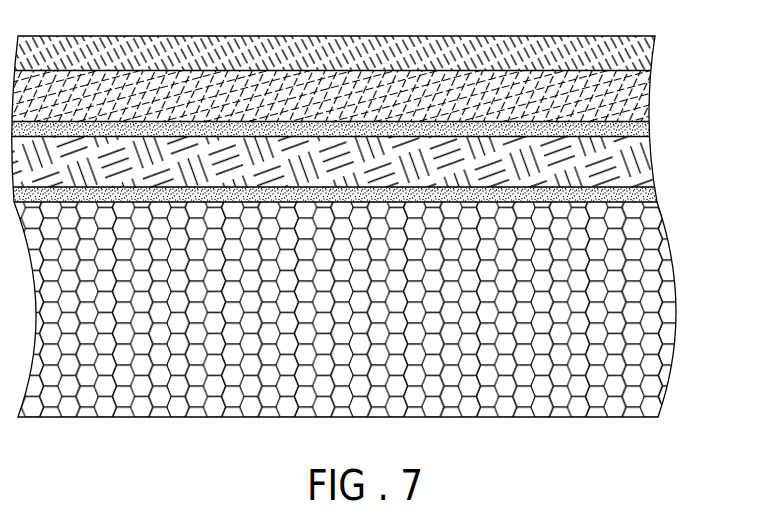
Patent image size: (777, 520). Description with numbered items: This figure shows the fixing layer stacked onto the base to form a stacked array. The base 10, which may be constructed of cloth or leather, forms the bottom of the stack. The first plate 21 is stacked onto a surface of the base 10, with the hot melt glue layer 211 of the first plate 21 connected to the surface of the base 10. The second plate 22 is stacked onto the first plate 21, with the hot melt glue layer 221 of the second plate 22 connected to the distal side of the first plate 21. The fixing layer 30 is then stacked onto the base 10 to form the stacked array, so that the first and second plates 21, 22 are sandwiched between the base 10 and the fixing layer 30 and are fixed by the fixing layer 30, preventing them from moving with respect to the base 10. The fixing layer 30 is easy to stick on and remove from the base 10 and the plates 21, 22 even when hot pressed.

The base 10 is at (645, 320).
The first plate 21 is at (630, 163).
The hot melt glue layer 211 is at (655, 193).
The second plate 22 is at (635, 95).
The hot melt glue layer 221 is at (645, 127).
The fixing layer 30 is at (630, 52).